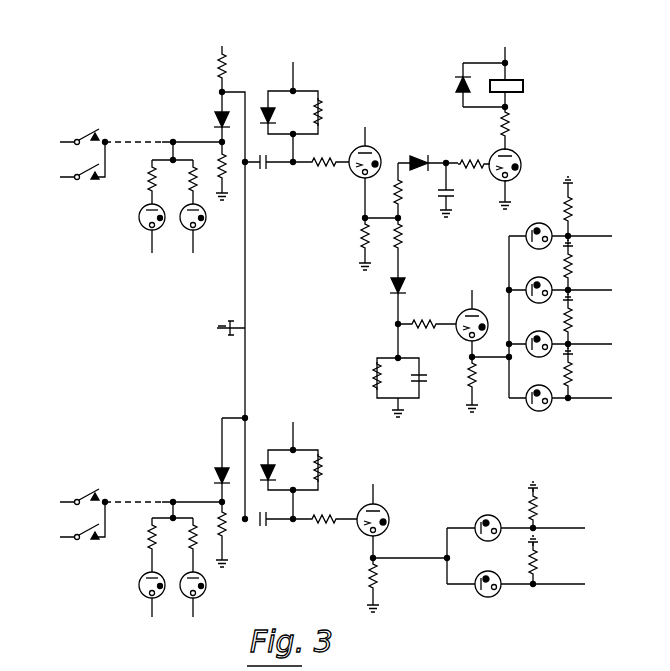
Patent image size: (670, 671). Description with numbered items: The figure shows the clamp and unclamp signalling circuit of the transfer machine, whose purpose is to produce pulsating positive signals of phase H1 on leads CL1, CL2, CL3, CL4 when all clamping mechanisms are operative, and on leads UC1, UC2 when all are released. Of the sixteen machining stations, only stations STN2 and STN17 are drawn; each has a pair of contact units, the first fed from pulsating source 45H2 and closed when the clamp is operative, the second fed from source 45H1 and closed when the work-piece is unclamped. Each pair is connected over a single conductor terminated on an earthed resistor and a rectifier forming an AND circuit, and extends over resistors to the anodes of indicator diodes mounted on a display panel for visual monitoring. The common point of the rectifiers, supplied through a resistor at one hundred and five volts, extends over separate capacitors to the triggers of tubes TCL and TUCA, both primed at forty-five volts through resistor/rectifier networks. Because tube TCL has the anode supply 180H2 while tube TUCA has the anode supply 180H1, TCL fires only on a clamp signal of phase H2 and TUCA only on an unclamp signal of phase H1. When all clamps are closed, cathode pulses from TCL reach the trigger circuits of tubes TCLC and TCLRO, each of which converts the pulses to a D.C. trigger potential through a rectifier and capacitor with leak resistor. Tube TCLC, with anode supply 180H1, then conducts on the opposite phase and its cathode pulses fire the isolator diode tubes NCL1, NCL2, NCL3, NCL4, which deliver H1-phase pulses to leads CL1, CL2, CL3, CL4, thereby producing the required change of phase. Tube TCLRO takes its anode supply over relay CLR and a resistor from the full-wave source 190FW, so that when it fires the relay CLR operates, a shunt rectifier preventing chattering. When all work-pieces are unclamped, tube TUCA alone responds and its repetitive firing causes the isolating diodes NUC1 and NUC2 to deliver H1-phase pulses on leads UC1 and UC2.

The pulse repeating tube TCL is at (373, 203).
The relay operating tube TCLRO is at (527, 158).
The relay CLR is at (555, 84).
The phase changing tube TCLC is at (468, 360).
The pulse repeating tube TUCA is at (402, 558).
The isolator diode tube NCL1 is at (535, 406).
The isolator diode tube NCL2 is at (535, 352).
The isolator diode tube NCL3 is at (535, 298).
The isolator diode tube NCL4 is at (535, 244).
The isolating diode NUC1 is at (488, 521).
The isolating diode NUC2 is at (488, 577).
The clamp signal lead CL1 is at (595, 398).
The clamp signal lead CL2 is at (595, 344).
The clamp signal lead CL3 is at (595, 290).
The clamp signal lead CL4 is at (595, 236).
The unclamp signal lead UC1 is at (557, 528).
The unclamp signal lead UC2 is at (557, 584).
The machining station STN2 is at (77, 199).
The machining station STN17 is at (77, 559).
The pulsating supply lead 180H2 is at (367, 129).
The pulsating supply lead 180H1 is at (429, 390).
The full-wave rectified supply lead 190FW is at (537, 351).
The pulsating supply lead 45H2 is at (41, 323).
The pulsating supply lead 45H1 is at (41, 358).